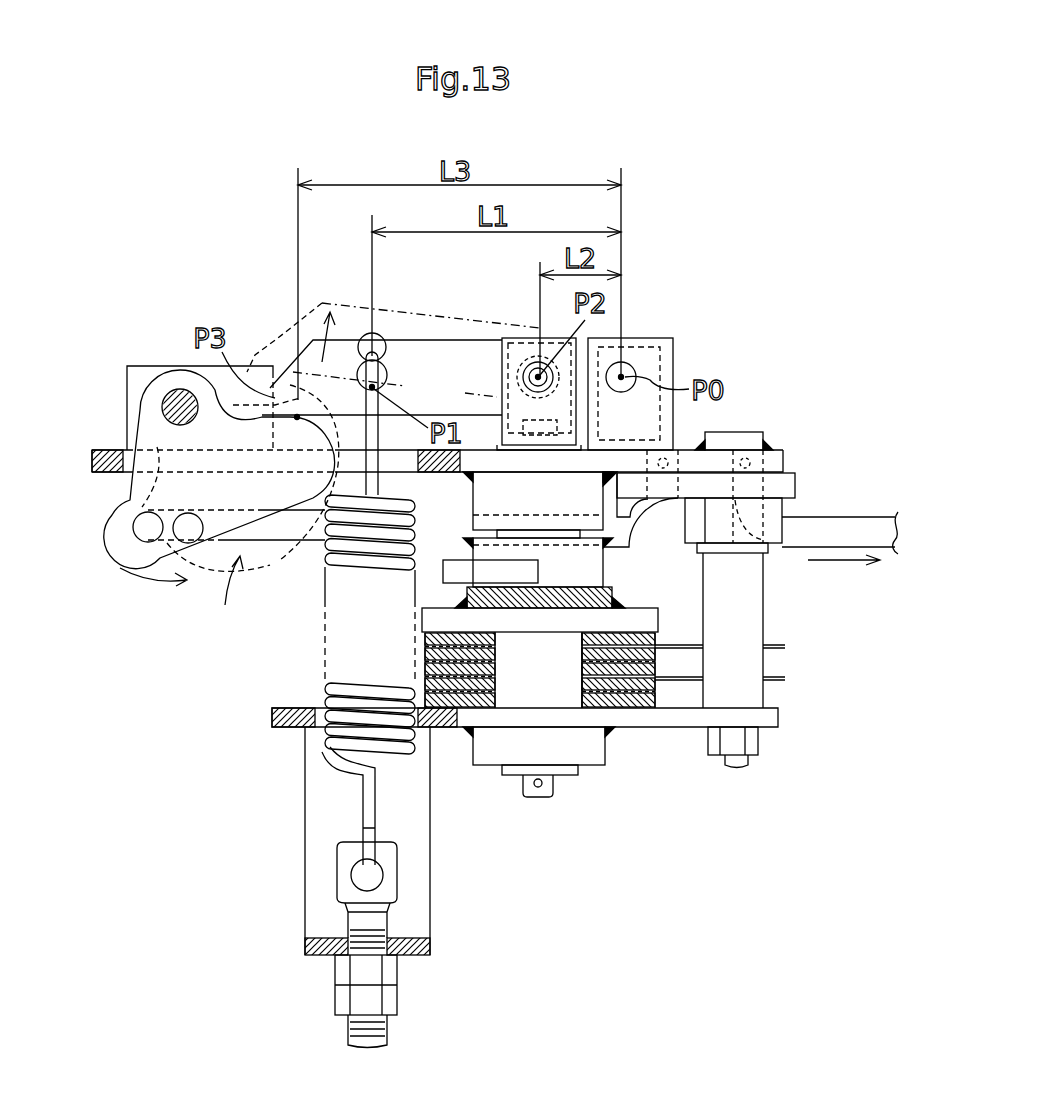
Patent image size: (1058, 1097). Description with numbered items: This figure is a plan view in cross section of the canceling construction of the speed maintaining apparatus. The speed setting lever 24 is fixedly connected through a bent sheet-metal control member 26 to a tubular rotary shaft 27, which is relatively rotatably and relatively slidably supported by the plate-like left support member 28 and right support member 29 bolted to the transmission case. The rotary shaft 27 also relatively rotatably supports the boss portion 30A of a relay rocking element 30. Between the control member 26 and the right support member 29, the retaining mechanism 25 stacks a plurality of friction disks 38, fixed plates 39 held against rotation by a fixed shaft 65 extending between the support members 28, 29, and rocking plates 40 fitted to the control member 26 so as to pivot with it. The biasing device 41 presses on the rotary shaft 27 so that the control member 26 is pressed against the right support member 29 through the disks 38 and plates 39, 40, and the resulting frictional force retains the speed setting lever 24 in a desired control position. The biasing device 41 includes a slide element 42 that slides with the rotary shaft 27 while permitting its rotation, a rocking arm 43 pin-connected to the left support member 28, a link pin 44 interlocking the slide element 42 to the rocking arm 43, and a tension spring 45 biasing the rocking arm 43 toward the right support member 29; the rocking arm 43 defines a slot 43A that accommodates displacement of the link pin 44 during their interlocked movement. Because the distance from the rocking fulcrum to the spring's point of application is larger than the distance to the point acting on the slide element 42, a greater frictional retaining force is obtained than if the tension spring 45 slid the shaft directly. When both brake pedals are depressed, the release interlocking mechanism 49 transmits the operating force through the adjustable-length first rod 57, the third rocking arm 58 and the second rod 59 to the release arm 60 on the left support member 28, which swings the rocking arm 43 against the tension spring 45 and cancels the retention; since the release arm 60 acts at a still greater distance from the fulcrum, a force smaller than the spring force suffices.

The biasing device 41 is at (714, 320).
The slide element 42 is at (503, 357).
The rocking arm 43 is at (415, 338).
The slot 43A is at (416, 350).
The link pin 44 is at (543, 385).
The left support member 28 is at (782, 451).
The third rocking arm 58 is at (793, 485).
The first rod 57 is at (868, 520).
The release arm 60 is at (118, 532).
The second rod 59 is at (297, 540).
The release interlocking mechanism 49 is at (220, 597).
The relay rocking element 30 is at (429, 583).
The boss portion 30A is at (602, 555).
The control member 26 is at (656, 617).
The speed setting lever 24 is at (647, 607).
The fixed shaft 65 is at (760, 628).
The retaining mechanism 25 is at (410, 670).
The fixed plates 39 is at (790, 704).
The friction disks 38 is at (641, 687).
The rocking plates 40 is at (664, 690).
The right support member 29 is at (768, 723).
The rotary shaft 27 is at (505, 707).
The tension spring 45 is at (326, 753).